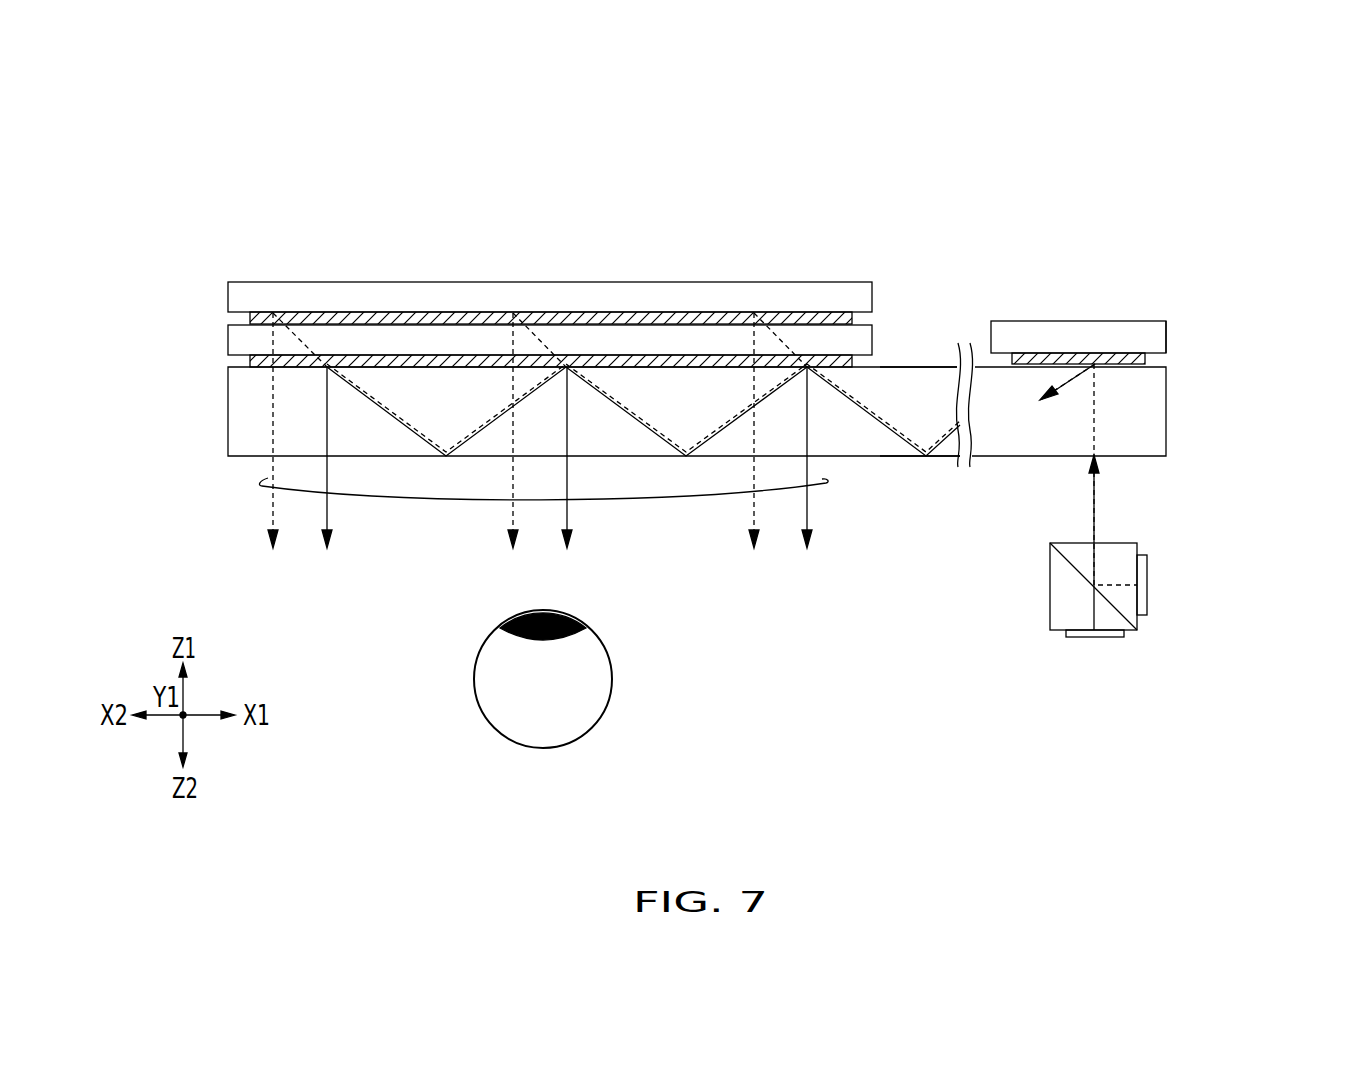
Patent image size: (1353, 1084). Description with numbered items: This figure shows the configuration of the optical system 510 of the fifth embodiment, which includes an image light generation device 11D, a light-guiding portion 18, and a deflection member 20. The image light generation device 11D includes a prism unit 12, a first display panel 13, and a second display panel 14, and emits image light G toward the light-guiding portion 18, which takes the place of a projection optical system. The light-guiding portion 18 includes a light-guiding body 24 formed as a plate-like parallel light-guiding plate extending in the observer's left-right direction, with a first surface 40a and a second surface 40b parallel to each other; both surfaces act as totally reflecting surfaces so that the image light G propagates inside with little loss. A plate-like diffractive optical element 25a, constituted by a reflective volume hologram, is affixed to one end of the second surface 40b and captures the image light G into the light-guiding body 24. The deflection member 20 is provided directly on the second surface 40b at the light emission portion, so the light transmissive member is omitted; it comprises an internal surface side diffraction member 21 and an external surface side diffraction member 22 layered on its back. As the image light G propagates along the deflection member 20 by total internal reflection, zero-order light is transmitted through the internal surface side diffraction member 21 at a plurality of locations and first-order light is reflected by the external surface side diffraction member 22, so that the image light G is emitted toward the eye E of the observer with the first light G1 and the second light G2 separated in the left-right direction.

The optical system 510 is at (978, 157).
The deflection member 20 is at (490, 268).
The external surface side diffraction member 22 is at (208, 298).
The internal surface side diffraction member 21 is at (208, 345).
The light-guiding body 24 is at (1150, 396).
The diffractive optical element 25a is at (1058, 318).
The light-guiding portion 18 is at (1192, 338).
The first surface 40a is at (940, 467).
The second surface 40b is at (927, 365).
The prism unit 12 is at (1022, 564).
The first display panel 13 is at (1142, 595).
The second display panel 14 is at (1105, 637).
The image light generation device 11D is at (1082, 634).
The eye E is at (473, 680).
The first light G1 is at (268, 518).
The second light G2 is at (333, 518).
The image light G is at (660, 500).